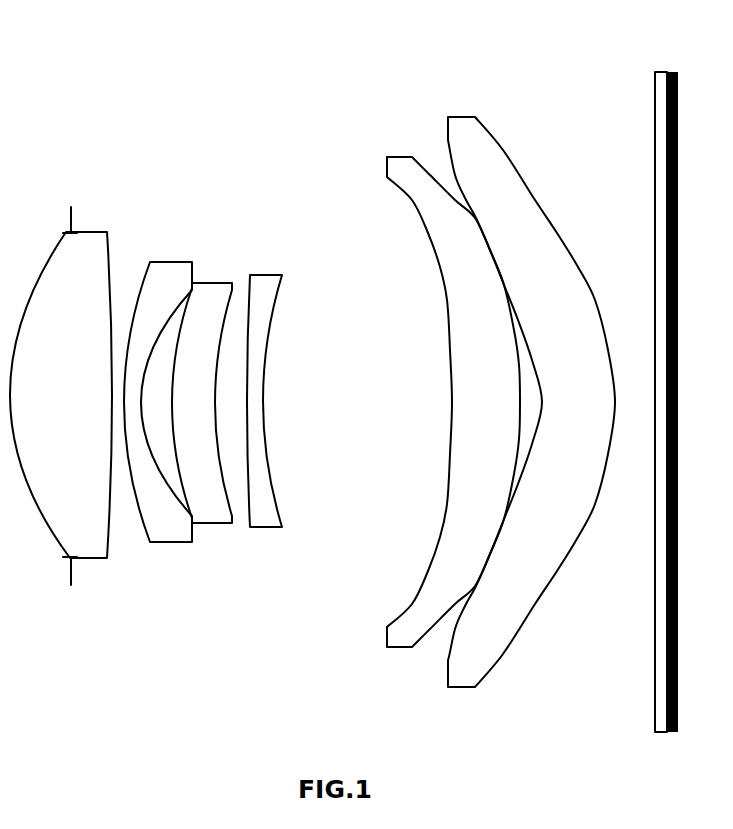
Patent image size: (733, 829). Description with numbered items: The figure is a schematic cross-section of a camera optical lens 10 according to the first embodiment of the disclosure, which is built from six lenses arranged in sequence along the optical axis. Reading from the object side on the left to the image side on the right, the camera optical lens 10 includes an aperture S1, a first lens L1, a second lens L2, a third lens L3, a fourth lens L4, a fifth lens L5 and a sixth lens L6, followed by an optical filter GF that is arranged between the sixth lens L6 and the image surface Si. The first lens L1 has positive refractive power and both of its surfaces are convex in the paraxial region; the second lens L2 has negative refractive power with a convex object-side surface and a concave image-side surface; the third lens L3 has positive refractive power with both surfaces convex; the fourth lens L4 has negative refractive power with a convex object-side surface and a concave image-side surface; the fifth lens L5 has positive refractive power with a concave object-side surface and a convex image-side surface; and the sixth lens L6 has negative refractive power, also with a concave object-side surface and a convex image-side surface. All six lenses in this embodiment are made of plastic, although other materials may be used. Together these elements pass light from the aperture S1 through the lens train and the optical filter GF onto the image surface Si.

The camera optical lens 10 is at (344, 25).
The aperture S1 is at (67, 379).
The first lens L1 is at (61, 380).
The second lens L2 is at (158, 386).
The third lens L3 is at (202, 387).
The fourth lens L4 is at (264, 385).
The fifth lens L5 is at (452, 387).
The sixth lens L6 is at (530, 387).
The optical filter GF is at (646, 392).
The image surface Si is at (679, 392).